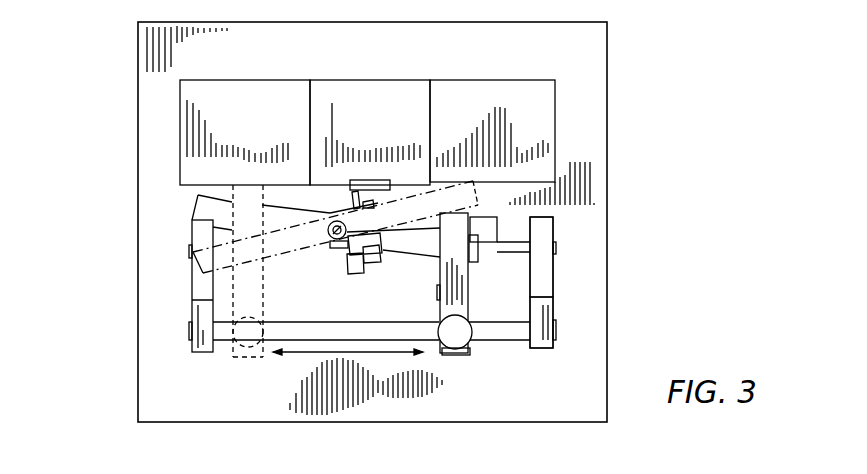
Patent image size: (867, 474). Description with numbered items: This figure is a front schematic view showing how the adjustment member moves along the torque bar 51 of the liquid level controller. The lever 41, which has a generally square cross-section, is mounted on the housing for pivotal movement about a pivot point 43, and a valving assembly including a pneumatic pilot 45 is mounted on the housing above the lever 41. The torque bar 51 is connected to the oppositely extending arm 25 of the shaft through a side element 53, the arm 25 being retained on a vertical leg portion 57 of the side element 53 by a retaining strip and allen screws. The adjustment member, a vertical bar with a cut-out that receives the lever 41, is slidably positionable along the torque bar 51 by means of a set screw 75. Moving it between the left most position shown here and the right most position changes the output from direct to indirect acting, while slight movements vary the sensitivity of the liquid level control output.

The oppositely extending arm 25 is at (537, 223).
The lever 41 is at (200, 208).
The pivot point 43 is at (332, 239).
The pneumatic pilot 45 is at (380, 125).
The torque bar 51 is at (508, 333).
The side element 53 is at (547, 315).
The vertical leg portion 57 is at (547, 270).
The set screw 75 is at (457, 338).